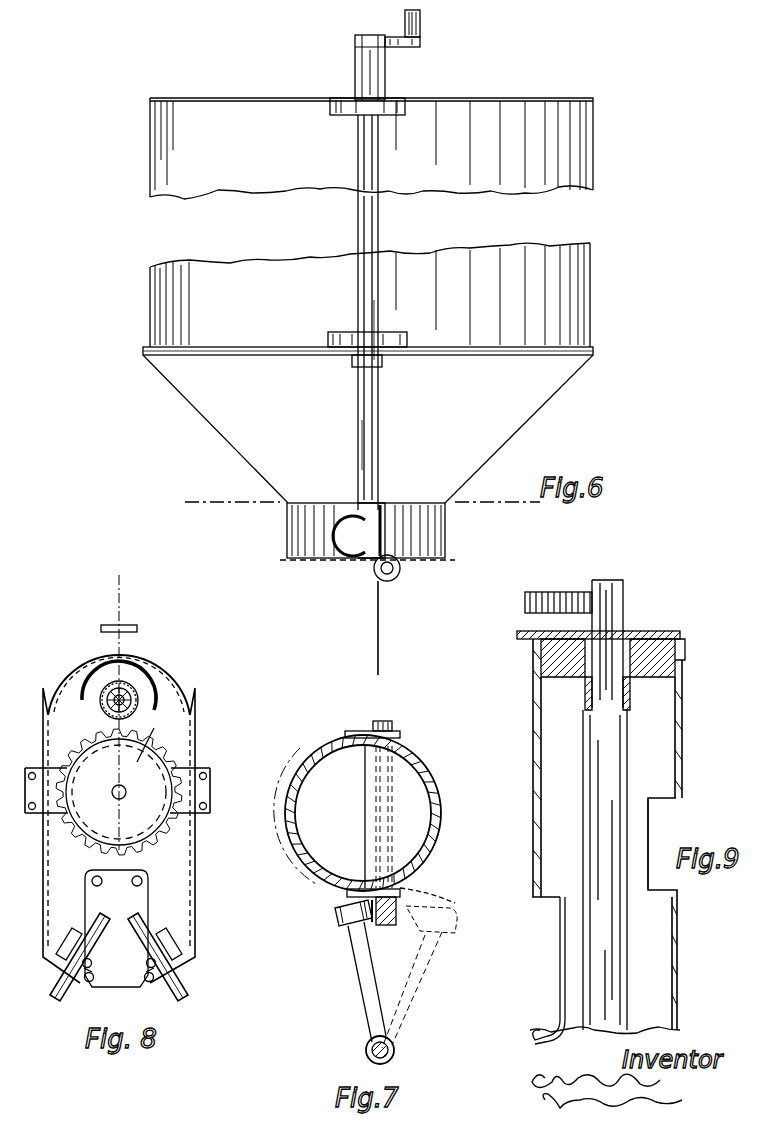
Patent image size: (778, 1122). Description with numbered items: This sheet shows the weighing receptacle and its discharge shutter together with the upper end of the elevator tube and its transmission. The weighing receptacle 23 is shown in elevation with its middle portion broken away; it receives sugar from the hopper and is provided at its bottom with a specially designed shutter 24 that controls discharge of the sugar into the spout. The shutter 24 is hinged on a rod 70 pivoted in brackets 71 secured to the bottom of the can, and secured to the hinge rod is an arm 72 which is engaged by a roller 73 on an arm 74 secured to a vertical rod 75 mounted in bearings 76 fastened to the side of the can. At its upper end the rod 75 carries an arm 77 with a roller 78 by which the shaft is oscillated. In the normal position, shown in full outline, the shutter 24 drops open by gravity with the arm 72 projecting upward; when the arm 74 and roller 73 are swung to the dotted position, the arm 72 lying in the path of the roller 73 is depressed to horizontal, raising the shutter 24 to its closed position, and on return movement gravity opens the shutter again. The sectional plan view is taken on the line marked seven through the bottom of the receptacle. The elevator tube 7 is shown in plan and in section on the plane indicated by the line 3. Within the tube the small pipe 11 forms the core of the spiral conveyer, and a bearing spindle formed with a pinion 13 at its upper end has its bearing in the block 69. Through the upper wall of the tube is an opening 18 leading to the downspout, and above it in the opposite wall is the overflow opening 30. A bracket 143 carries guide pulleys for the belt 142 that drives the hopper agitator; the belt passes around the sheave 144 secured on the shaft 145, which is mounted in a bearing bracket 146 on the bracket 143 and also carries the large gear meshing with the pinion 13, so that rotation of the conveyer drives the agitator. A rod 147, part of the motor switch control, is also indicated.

In FIG. 8, the section line 3 is at (115, 580).
In FIG. 6, the elevator tube 7 is at (355, 507).
In FIG. 8, the elevator tube 7 is at (178, 670).
In FIG. 9, the elevator tube 7 is at (683, 733).
In FIG. 8, the small pipe 11 is at (139, 698).
In FIG. 9, the small pipe 11 is at (628, 967).
In FIG. 8, the pinion 13 is at (100, 698).
In FIG. 9, the pinion 13 is at (624, 611).
In FIG. 9, the opening 18 is at (560, 967).
In FIG. 6, the weighing receptacle 23 is at (151, 303).
In FIG. 6, the shutter 24 is at (379, 633).
In FIG. 7, the shutter 24 is at (372, 806).
In FIG. 9, the opening 30 is at (650, 818).
In FIG. 8, the block 69 is at (143, 689).
In FIG. 9, the block 69 is at (668, 636).
In FIG. 6, the rod 70 is at (400, 570).
In FIG. 7, the rod 70 is at (388, 722).
In FIG. 7, the brackets 71 is at (360, 731).
In FIG. 7, the arm 72 is at (386, 925).
In FIG. 6, the roller 73 is at (336, 560).
In FIG. 7, the roller 73 is at (335, 918).
In FIG. 7, the arm 74 is at (352, 978).
In FIG. 6, the rod 75 is at (357, 149).
In FIG. 7, the rod 75 is at (394, 1050).
In FIG. 6, the bearings 76 is at (340, 115).
In FIG. 6, the arm 77 is at (396, 48).
In FIG. 6, the roller 78 is at (420, 24).
In FIG. 8, the belt 142 is at (172, 998).
In FIG. 8, the bracket 143 is at (196, 897).
In FIG. 9, the bracket 143 is at (521, 640).
In FIG. 8, the sheave 144 is at (181, 828).
In FIG. 8, the shaft 145 is at (127, 792).
In FIG. 8, the bearing bracket 146 is at (210, 790).
In FIG. 8, the rod 147 is at (135, 923).
In FIG. 9, the rod 147 is at (565, 592).